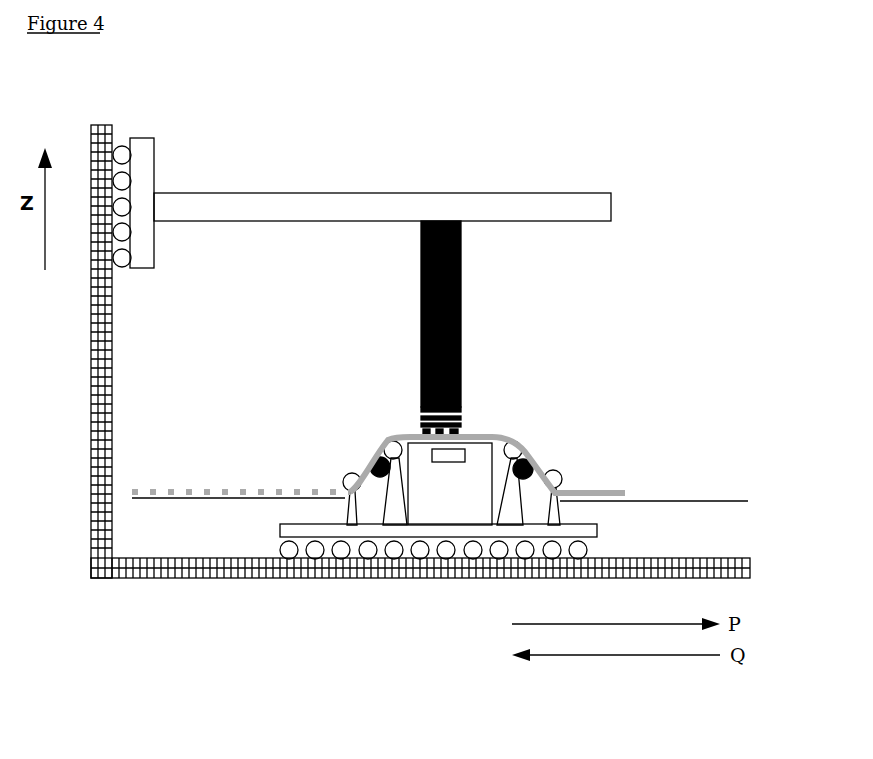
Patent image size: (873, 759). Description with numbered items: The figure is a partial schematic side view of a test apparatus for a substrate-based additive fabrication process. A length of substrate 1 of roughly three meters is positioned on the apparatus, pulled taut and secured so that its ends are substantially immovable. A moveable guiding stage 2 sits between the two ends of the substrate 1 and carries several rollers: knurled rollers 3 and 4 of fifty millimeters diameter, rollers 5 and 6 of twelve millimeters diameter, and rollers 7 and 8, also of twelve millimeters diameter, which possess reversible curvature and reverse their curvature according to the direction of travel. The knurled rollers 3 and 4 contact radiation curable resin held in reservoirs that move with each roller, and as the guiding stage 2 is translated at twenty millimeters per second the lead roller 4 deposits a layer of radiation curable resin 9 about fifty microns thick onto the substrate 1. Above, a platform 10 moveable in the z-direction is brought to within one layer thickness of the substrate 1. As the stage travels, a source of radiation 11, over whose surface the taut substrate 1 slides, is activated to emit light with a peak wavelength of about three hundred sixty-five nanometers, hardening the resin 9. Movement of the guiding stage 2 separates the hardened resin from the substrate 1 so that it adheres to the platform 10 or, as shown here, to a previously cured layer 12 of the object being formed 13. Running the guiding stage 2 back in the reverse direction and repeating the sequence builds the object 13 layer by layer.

The substrate 1 is at (742, 502).
The moveable guiding stage 2 is at (256, 535).
The knurled roller 3 is at (350, 492).
The lead roller 4 is at (555, 486).
The roller 5 is at (382, 442).
The roller 6 is at (507, 442).
The roller possessing reversible curvature 7 is at (370, 463).
The roller possessing reversible curvature 8 is at (532, 462).
The radiation curable resin 9 is at (620, 490).
The platform 10 is at (321, 172).
The source of radiation 11 is at (450, 484).
The previously cured layer 12 is at (462, 427).
The object being formed 13 is at (458, 334).